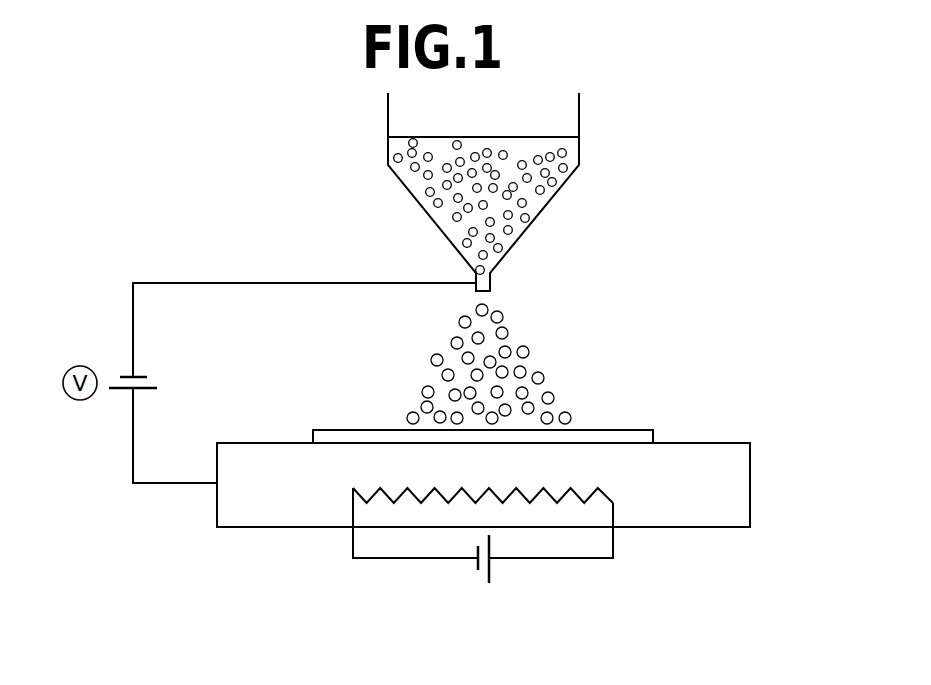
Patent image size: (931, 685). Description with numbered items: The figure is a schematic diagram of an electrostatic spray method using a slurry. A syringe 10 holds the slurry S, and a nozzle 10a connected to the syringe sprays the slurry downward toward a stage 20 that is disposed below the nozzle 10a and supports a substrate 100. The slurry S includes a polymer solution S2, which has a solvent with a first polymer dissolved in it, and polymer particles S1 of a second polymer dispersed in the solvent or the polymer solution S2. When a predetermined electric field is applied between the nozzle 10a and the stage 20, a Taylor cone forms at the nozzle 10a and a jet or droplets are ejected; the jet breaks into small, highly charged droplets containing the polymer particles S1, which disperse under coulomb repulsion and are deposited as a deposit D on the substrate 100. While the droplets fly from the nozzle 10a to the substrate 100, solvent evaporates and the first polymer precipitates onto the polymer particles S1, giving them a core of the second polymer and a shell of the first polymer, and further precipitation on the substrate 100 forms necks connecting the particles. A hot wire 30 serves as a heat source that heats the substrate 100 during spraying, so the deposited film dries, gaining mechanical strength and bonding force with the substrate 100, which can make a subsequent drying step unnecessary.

The feeder (hopper) 10 is at (579, 110).
The nozzle 10a is at (490, 283).
The slurry S is at (522, 207).
The polymer particles S1 is at (535, 220).
The polymer solution S2 is at (540, 202).
The deposited material D is at (530, 351).
The substrate 100 is at (655, 436).
The stage 20 is at (750, 485).
The hot wire 30 is at (363, 491).